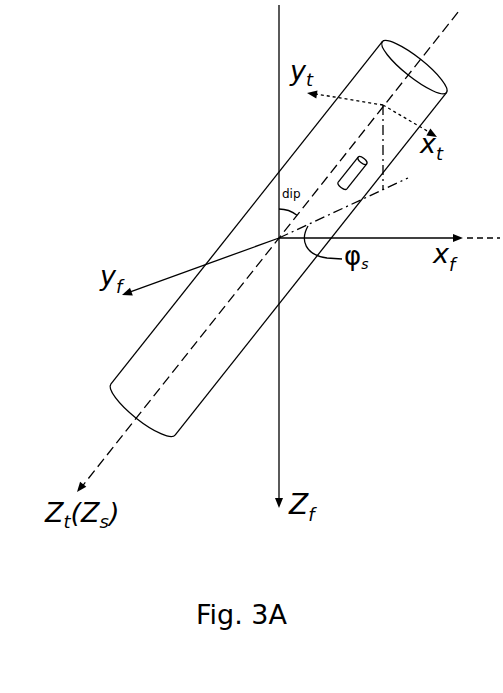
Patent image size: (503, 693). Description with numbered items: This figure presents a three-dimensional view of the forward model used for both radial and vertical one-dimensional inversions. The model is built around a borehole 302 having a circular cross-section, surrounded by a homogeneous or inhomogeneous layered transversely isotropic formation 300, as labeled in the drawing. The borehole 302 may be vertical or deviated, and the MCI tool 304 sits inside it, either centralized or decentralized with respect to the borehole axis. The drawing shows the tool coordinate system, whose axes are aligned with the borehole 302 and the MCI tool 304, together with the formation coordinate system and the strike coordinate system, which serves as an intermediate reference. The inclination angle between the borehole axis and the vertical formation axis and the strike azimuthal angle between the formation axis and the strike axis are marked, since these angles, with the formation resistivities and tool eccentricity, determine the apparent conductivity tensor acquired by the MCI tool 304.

The layered TI formation 300 is at (151, 155).
The borehole 302 is at (298, 281).
The MCI tool 304 is at (357, 182).